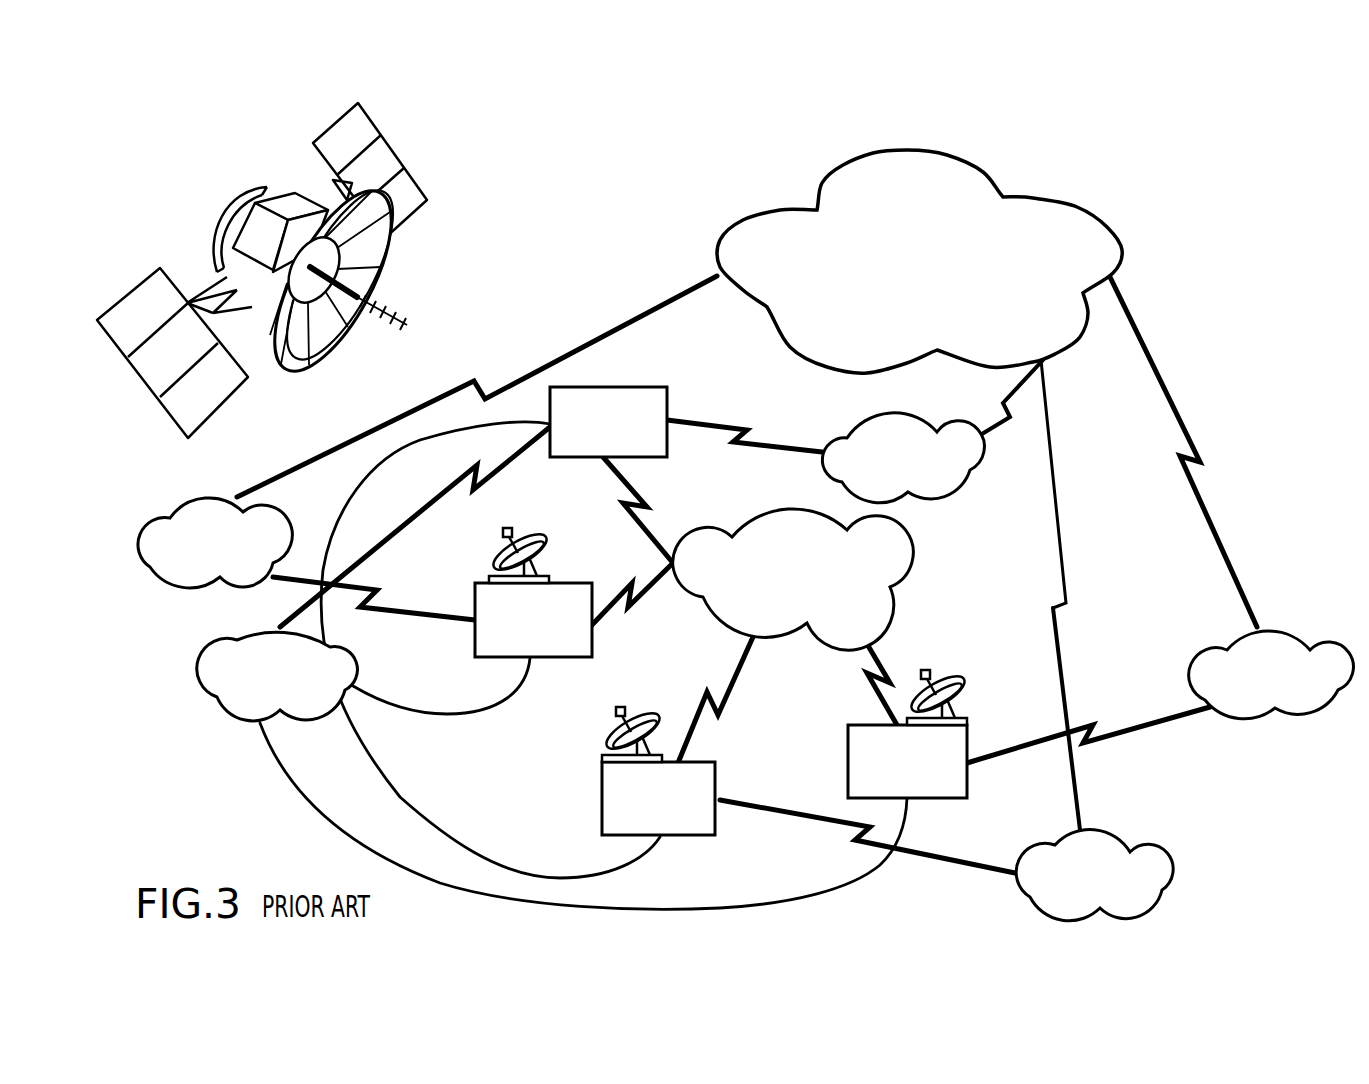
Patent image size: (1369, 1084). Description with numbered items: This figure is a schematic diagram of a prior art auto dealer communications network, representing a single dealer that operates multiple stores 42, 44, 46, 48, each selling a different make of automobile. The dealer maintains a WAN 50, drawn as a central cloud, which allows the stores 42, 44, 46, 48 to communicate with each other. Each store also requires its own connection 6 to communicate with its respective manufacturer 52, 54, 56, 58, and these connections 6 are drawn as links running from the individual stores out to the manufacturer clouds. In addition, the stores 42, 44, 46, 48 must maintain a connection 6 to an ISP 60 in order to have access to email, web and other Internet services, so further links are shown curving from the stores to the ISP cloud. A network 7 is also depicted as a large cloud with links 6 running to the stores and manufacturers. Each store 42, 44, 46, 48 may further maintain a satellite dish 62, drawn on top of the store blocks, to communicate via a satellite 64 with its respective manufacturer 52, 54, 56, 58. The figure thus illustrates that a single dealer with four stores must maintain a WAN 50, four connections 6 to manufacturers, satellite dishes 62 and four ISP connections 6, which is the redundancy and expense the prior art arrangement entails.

The connection 6 is at (482, 380).
The network 7 is at (897, 278).
The store 42 is at (890, 775).
The store 44 is at (645, 810).
The store 46 is at (518, 632).
The store 48 is at (592, 433).
The WAN 50 is at (775, 587).
The manufacturer 52 is at (1257, 687).
The manufacturer 54 is at (1078, 890).
The manufacturer 56 is at (195, 560).
The manufacturer 58 is at (890, 472).
The ISP 60 is at (262, 690).
The satellite dish 62 is at (490, 555).
The satellite 64 is at (390, 244).